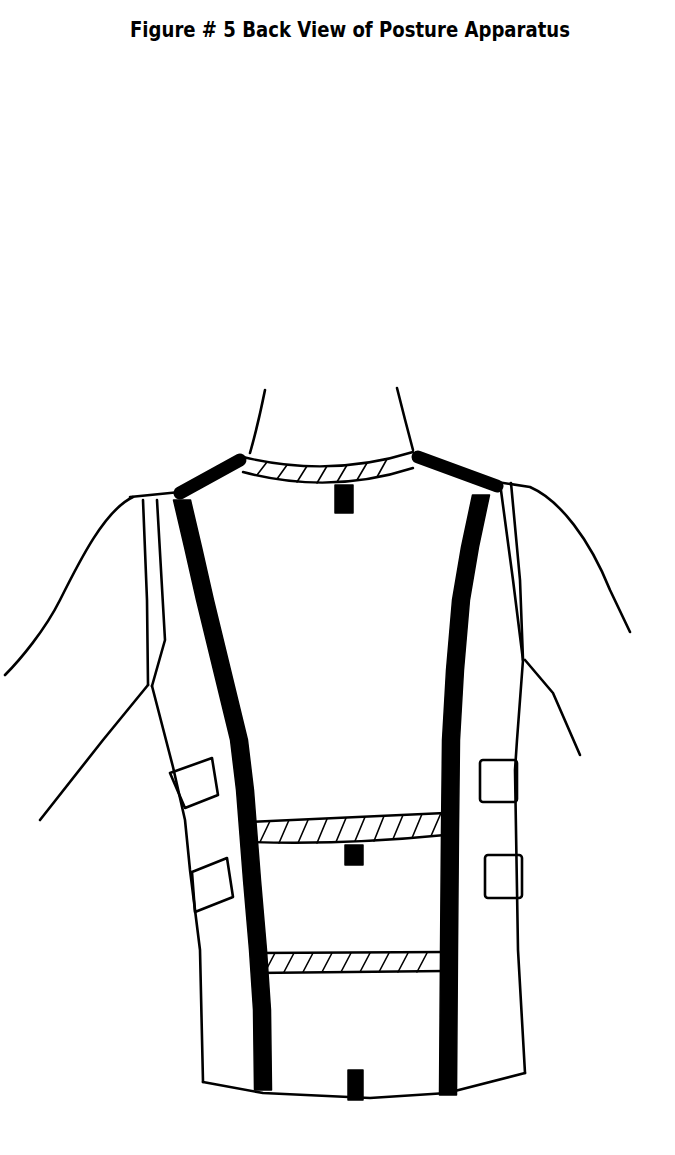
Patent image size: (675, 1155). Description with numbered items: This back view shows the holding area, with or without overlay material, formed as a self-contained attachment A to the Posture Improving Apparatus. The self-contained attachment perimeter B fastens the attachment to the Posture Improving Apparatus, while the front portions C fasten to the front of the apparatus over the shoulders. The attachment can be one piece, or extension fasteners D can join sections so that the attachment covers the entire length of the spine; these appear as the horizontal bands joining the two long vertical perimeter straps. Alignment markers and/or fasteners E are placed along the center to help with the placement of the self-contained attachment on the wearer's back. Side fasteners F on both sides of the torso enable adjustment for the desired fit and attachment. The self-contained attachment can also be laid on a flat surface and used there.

The self-contained attachment A is at (434, 651).
The self-contained attachment perimeter B is at (249, 581).
The front fastener C is at (197, 455).
The extension fasteners D is at (403, 453).
The alignment markers and/or fasteners E is at (367, 516).
The side fasteners F is at (123, 812).